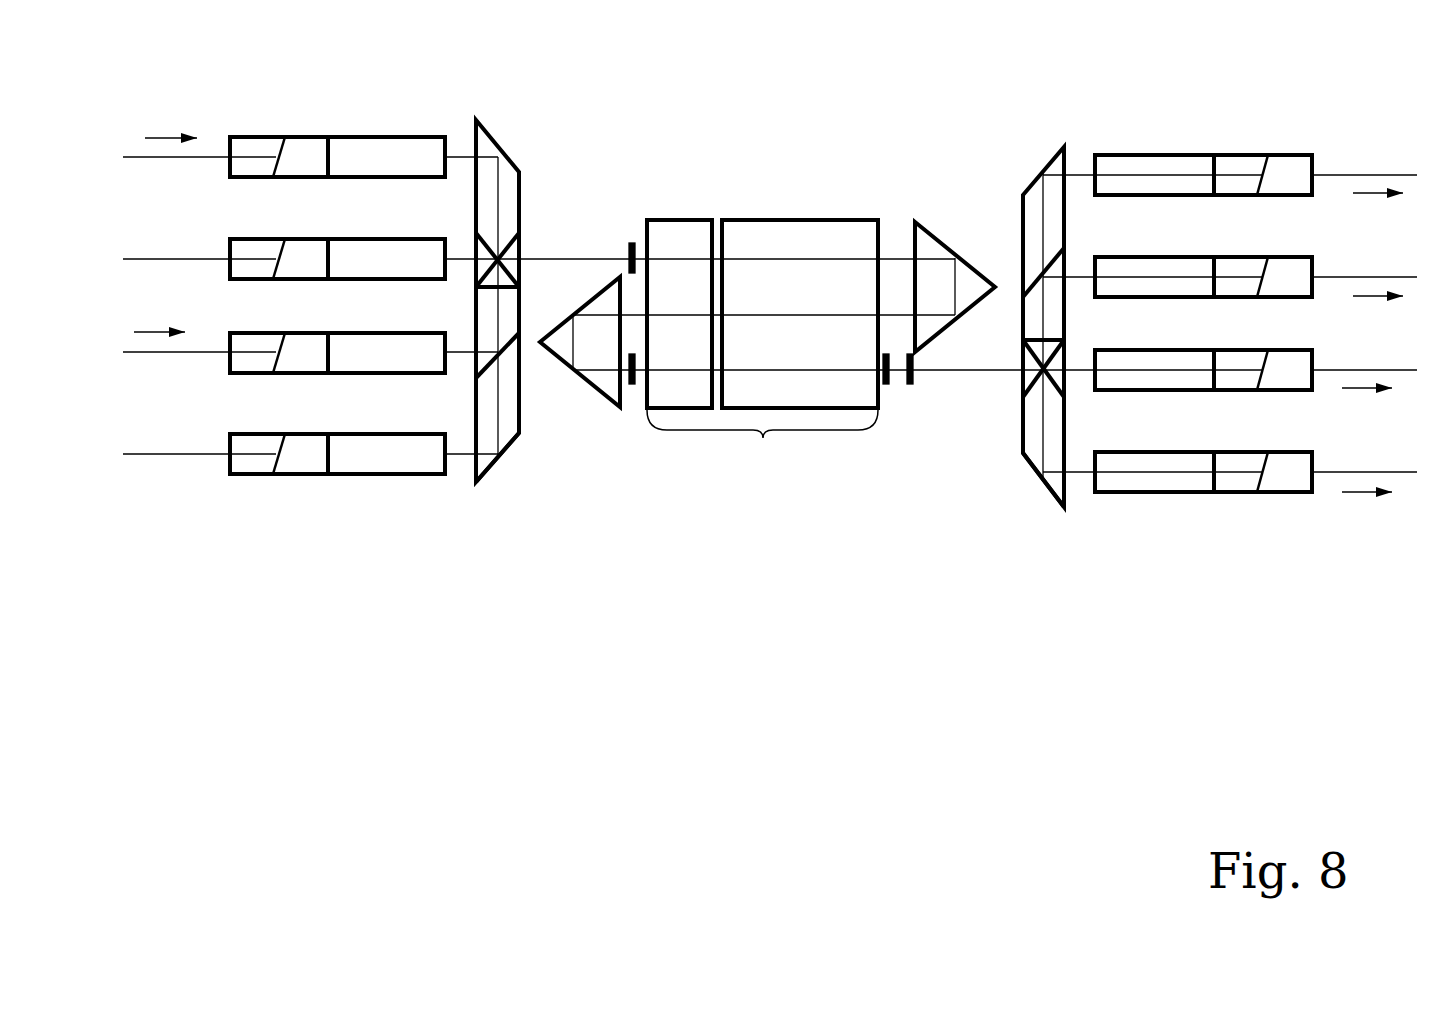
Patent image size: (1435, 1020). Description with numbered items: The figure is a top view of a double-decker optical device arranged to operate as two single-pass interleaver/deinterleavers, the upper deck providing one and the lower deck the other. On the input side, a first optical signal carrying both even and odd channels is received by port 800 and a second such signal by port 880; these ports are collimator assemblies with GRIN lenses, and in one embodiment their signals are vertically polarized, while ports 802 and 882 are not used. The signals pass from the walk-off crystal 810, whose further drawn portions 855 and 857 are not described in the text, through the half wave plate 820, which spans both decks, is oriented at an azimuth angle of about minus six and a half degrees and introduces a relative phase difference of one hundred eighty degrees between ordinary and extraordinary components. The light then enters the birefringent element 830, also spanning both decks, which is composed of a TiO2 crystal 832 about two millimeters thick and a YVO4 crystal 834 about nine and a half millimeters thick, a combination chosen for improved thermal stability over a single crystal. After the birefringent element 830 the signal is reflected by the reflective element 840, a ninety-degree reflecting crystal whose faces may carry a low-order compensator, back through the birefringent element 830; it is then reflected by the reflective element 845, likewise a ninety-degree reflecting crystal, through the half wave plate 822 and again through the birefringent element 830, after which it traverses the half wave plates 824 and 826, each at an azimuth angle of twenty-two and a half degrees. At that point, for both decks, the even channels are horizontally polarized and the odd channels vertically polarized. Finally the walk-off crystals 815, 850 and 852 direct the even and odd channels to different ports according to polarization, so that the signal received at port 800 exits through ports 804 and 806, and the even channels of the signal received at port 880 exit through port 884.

The port 800 is at (366, 133).
The port 802 is at (322, 236).
The port 880 is at (302, 372).
The port 882 is at (343, 476).
The walk-off crystal 810 is at (484, 125).
The reflector portion of beam splitter 857 is at (474, 316).
The bottom reflector of beam splitter 855 is at (488, 478).
The reflective element 845 is at (598, 396).
The half wave plate 820 is at (627, 242).
The half wave plate 822 is at (632, 388).
The half wave plate 824 is at (888, 390).
The half wave plate 826 is at (908, 390).
The birefringent element 830 is at (762, 321).
The crystal 832 is at (683, 218).
The crystal 834 is at (774, 218).
The reflective element 840 is at (923, 220).
The walk-off crystal 850 is at (1019, 192).
The walk-off crystal 852 is at (1033, 317).
The walk-off crystal 815 is at (1029, 458).
The port 884 is at (1145, 153).
The port 804 is at (1163, 391).
The port 806 is at (1184, 494).